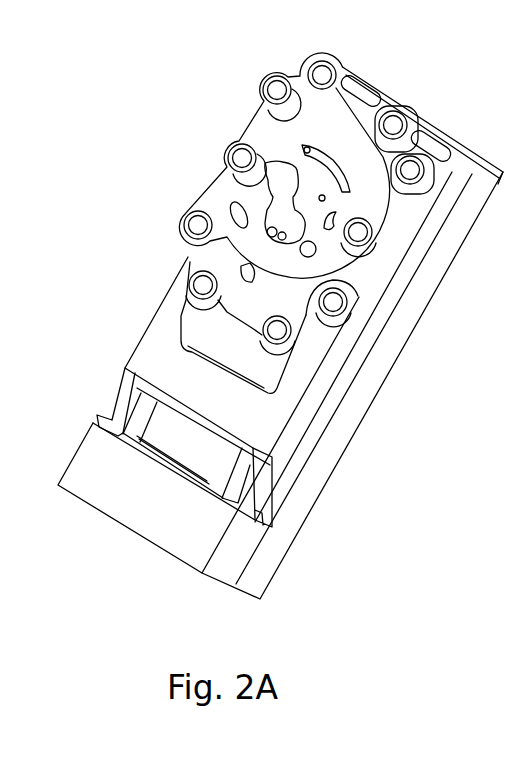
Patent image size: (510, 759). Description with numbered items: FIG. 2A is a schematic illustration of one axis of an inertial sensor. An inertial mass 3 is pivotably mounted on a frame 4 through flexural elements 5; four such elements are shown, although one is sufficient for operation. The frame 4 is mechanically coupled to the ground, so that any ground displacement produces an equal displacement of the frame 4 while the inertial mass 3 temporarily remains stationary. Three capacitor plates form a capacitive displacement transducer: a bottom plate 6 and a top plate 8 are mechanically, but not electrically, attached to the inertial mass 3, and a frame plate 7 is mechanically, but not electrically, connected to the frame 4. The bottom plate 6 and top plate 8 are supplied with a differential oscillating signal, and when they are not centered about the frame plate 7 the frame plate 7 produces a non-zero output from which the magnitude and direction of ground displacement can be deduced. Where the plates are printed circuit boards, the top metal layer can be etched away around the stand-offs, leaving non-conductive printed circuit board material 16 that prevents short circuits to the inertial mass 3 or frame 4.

The inertial mass 3 is at (153, 345).
The frame 4 is at (100, 462).
The flexural elements 5 is at (124, 384).
The bottom plate 6 is at (250, 132).
The frame plate 7 is at (210, 258).
The top plate 8 is at (220, 200).
The non-conductive printed circuit board material 16 is at (413, 120).